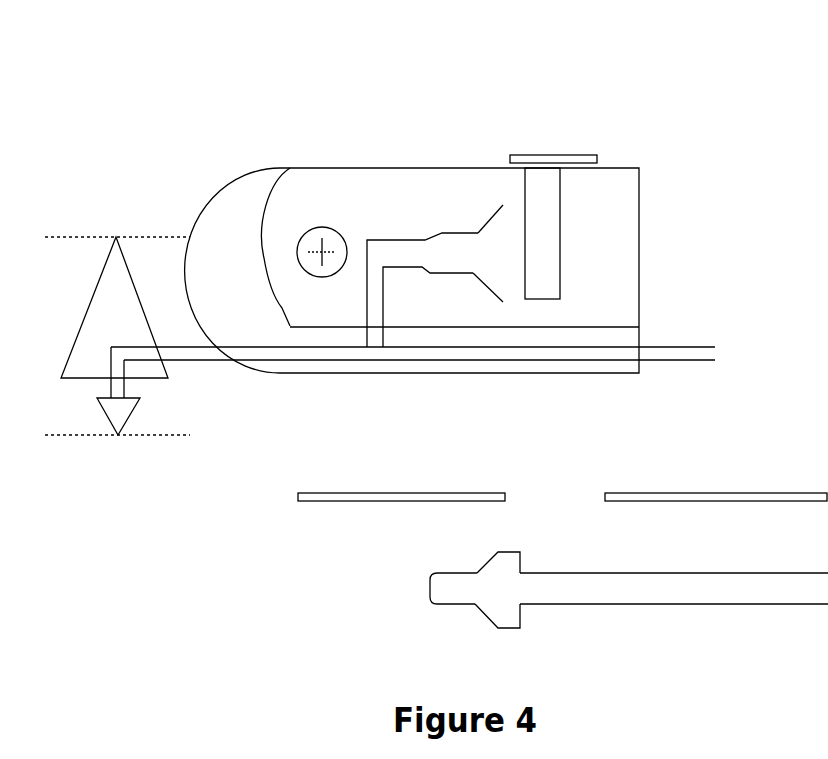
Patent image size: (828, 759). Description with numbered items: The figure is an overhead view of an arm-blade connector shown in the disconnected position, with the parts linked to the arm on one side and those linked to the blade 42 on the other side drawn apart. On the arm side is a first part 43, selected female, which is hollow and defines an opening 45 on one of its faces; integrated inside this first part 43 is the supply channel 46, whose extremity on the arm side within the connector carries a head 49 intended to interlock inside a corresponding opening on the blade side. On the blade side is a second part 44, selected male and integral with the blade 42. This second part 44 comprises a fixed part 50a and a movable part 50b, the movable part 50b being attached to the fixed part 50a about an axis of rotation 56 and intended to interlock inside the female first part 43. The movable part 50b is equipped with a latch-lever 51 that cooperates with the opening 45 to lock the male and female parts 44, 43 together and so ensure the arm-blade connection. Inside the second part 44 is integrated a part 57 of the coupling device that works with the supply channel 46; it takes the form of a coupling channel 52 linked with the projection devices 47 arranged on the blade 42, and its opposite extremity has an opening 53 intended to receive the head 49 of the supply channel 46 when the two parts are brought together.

The blade 42 is at (107, 307).
The first part 43 is at (655, 497).
The second part 44 is at (274, 149).
The opening 45 is at (555, 500).
The supply channel 46 is at (703, 593).
The projection devices 47 is at (118, 413).
The head 49 is at (505, 589).
The fixed part 50a is at (218, 247).
The movable part 50b is at (623, 205).
The latch-lever 51 is at (538, 160).
The coupling channel 52 is at (373, 297).
The opening 53 is at (490, 250).
The axis of rotation 56 is at (320, 230).
The part of the coupling device 57 is at (442, 247).